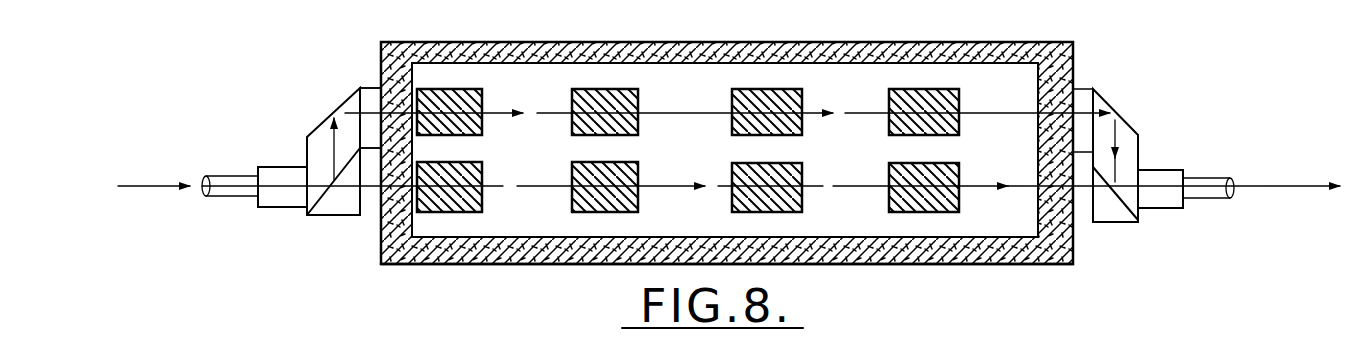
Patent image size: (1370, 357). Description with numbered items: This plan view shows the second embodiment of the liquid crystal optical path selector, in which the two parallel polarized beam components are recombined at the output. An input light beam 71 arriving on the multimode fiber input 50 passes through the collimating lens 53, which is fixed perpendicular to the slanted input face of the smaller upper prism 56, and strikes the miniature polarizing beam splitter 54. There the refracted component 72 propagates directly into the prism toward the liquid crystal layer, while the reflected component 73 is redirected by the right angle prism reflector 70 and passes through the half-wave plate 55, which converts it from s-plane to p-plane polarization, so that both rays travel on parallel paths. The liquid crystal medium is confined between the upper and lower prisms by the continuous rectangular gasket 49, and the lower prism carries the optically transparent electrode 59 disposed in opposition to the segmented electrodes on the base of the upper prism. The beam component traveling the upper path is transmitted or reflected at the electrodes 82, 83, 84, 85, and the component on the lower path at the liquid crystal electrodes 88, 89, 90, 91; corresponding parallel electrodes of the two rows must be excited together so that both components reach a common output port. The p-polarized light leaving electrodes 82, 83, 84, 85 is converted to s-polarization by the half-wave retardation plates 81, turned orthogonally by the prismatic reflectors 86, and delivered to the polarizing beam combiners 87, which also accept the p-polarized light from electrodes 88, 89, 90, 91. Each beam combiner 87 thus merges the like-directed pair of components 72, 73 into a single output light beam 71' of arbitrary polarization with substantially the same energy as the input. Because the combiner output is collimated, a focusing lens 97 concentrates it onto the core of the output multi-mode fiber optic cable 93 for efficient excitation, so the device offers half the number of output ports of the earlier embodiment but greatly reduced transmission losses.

The rectangular gasket 49 is at (742, 55).
The optically transparent electrode 59 is at (993, 67).
The upper prism 56 is at (933, 265).
The input light beam 71 is at (154, 160).
The output light beam 71' is at (1174, 161).
The multimode fiber input 50 is at (228, 176).
The collimating lens 53 is at (282, 167).
The right angle prism reflector 70 is at (322, 122).
The polarizing beam splitter 54 is at (330, 215).
The half-wave plate 55 is at (368, 88).
The reflected component 73 is at (503, 110).
The refracted component 72 is at (547, 187).
The electrode 82 is at (468, 89).
The electrode 83 is at (638, 90).
The electrode 84 is at (802, 89).
The electrode 85 is at (959, 89).
The liquid crystal electrode 88 is at (482, 172).
The liquid crystal electrode 89 is at (640, 172).
The liquid crystal electrode 90 is at (802, 165).
The liquid crystal electrode 91 is at (959, 165).
The half-wave retardation plate 81 is at (1090, 88).
The prismatic reflector 86 is at (1117, 110).
The polarizing beam combiner 87 is at (1112, 223).
The focusing lens 97 is at (1165, 170).
The multi-mode fiber optic cable 93 is at (1210, 178).